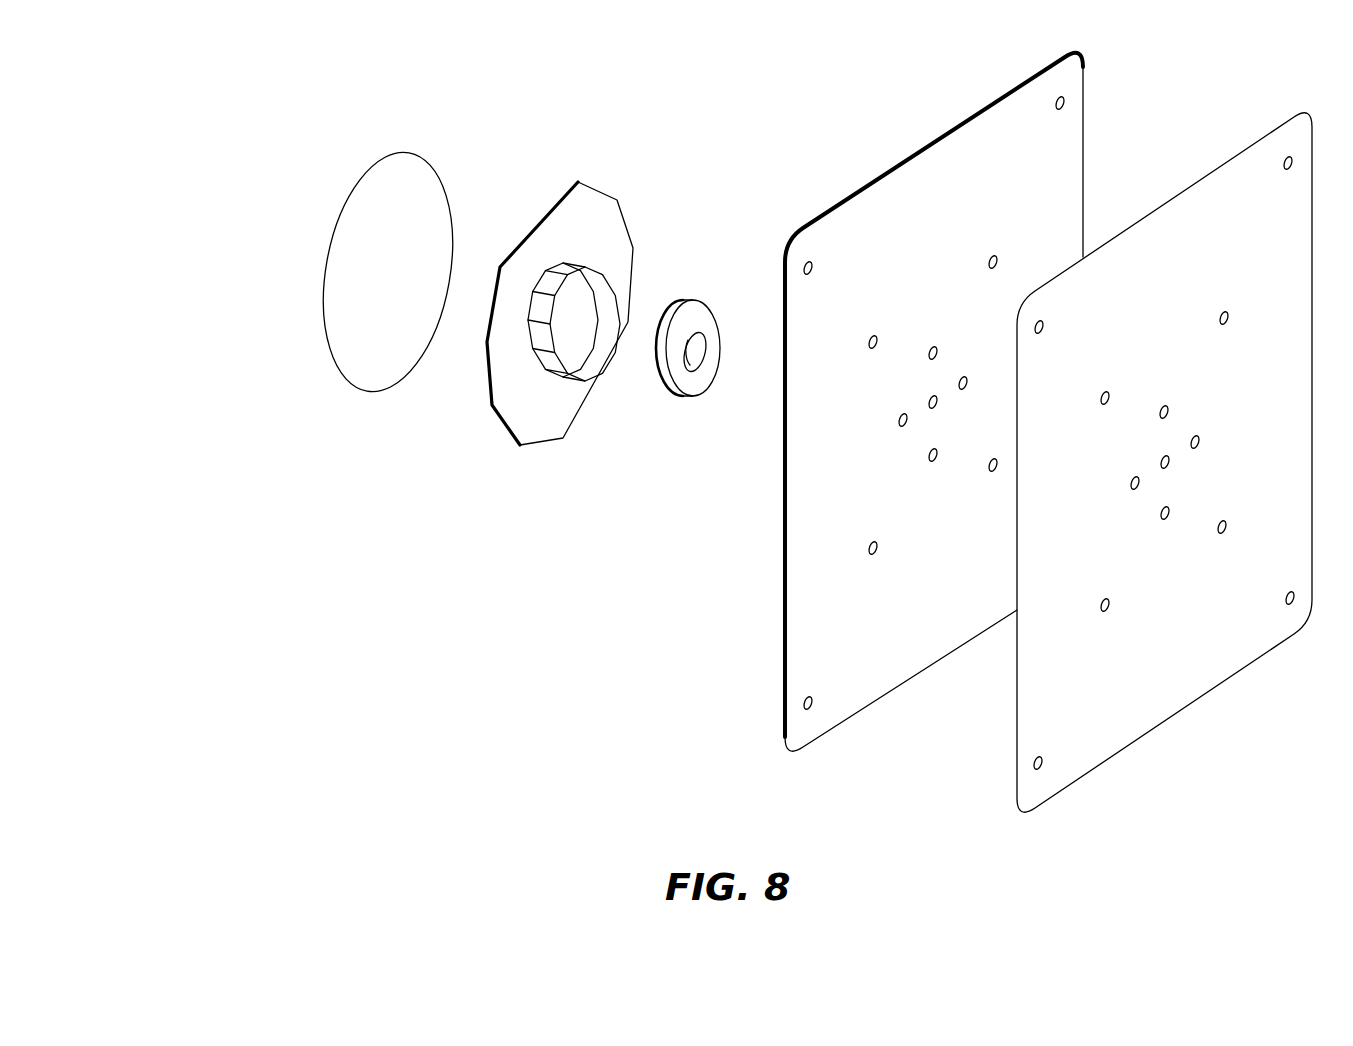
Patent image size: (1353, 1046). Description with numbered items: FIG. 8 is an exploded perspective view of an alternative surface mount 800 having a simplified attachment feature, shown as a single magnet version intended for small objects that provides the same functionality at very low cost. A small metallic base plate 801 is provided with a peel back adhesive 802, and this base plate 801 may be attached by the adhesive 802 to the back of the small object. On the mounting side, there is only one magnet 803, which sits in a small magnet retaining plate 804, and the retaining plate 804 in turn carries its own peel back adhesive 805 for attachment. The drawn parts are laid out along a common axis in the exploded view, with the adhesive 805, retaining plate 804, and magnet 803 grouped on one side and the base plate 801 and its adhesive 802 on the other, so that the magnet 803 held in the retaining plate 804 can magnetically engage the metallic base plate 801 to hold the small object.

The mounting assembly 800 is at (272, 250).
The small metallic base plate 801 is at (782, 738).
The peel back adhesive 802 is at (1020, 805).
The magnet 803 is at (660, 388).
The small magnet retaining plate 804 is at (493, 403).
The peel back adhesive 805 is at (335, 363).